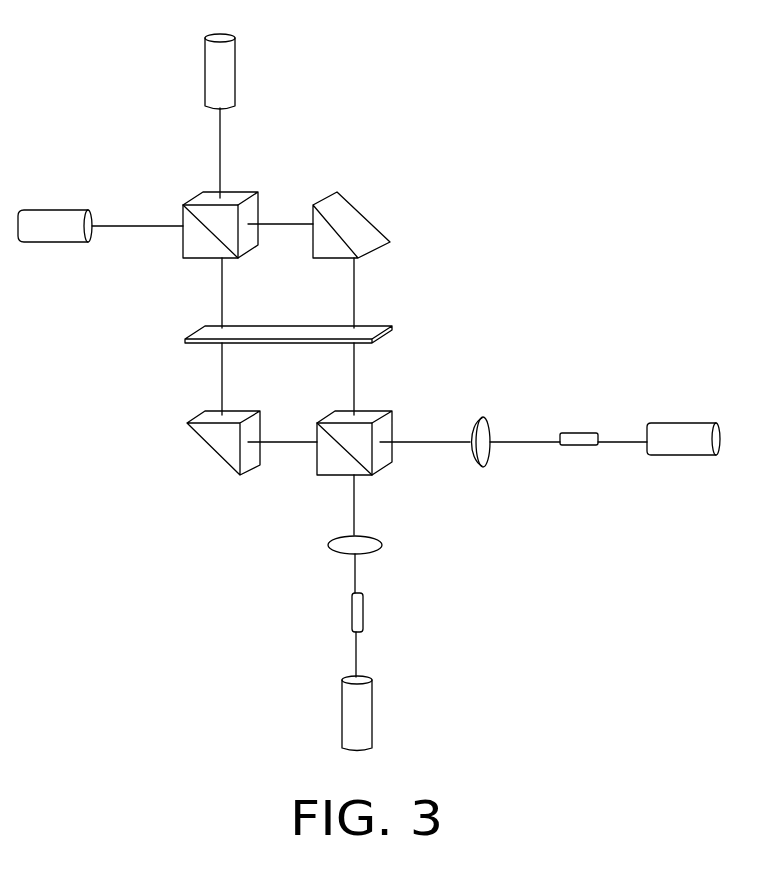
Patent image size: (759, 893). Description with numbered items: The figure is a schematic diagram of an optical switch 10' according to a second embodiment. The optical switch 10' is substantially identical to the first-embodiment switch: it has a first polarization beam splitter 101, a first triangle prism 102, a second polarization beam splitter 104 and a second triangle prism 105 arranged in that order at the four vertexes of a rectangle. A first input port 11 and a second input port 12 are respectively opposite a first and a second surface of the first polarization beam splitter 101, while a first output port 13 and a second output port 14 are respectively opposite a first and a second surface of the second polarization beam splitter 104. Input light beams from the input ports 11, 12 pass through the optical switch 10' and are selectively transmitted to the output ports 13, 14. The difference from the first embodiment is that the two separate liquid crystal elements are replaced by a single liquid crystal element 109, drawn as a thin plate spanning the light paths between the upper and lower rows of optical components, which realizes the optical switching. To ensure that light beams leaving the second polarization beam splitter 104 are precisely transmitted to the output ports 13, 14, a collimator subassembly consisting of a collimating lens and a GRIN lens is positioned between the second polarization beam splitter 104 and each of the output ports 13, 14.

The optical switch 10' is at (593, 226).
The first input port 11 is at (220, 83).
The second input port 12 is at (57, 220).
The first output port 13 is at (678, 442).
The second output port 14 is at (365, 698).
The first polarization beam splitter 101 is at (240, 193).
The first triangle prism 102 is at (343, 207).
The second polarization beam splitter 104 is at (362, 417).
The second triangle prism 105 is at (235, 418).
The liquid crystal element 109 is at (372, 326).